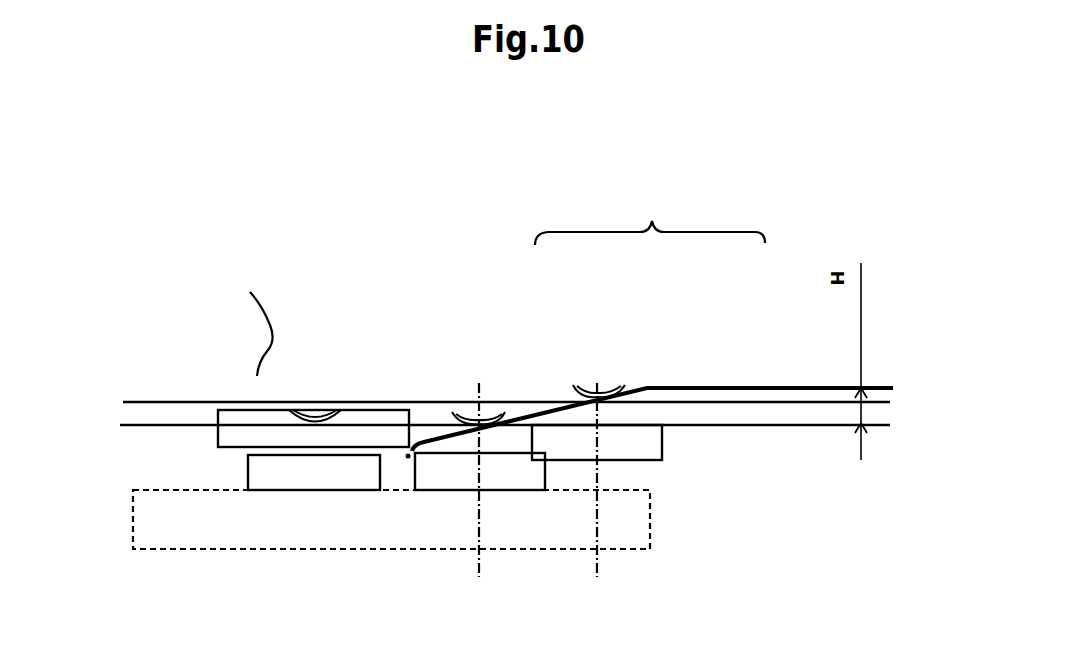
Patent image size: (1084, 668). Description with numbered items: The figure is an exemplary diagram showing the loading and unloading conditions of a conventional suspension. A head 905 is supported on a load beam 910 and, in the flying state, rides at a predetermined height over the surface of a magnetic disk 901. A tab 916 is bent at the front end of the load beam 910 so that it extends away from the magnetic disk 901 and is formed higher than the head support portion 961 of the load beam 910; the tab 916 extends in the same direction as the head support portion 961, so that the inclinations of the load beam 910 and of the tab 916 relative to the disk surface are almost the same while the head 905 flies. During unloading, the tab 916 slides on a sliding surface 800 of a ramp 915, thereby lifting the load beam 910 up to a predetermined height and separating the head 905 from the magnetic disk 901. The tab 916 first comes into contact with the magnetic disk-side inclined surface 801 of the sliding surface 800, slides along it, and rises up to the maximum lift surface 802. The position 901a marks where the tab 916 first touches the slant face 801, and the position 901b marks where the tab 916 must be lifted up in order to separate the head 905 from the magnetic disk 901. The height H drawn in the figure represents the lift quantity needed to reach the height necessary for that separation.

The sliding surface 800 is at (650, 207).
The magnetic disk-side inclined surface 801 is at (632, 390).
The maximum lift surface 802 is at (735, 387).
The head 905 is at (247, 472).
The load beam 910 is at (253, 319).
The ramp 915 is at (888, 374).
The tab 916 is at (328, 406).
The head support portion 961 is at (402, 407).
The magnetic disk 901 is at (160, 540).
The position of first contact 901a is at (475, 555).
The position required for head separation 901b is at (595, 553).